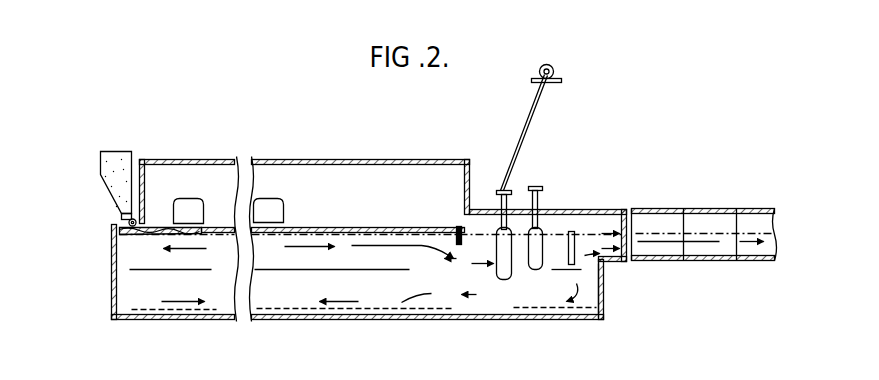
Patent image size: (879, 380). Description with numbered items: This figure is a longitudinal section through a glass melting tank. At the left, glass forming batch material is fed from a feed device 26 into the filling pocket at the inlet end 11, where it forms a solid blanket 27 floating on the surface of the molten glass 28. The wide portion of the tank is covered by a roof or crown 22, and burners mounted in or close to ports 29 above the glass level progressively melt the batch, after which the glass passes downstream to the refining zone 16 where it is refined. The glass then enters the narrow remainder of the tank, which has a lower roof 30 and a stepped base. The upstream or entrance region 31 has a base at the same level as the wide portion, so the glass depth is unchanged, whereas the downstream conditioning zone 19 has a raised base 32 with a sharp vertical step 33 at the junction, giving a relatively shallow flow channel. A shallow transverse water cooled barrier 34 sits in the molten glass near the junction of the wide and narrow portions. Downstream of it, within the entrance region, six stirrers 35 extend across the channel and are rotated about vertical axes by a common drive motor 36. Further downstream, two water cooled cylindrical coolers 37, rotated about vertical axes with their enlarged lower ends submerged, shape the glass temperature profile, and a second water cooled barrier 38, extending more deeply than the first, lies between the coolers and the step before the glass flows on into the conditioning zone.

The inlet end 11 is at (111, 268).
The refining zone 16 is at (383, 280).
The conditioning zone 19 is at (715, 238).
The roof or crown 22 is at (412, 160).
The feed device 26 is at (99, 163).
The solid blanket 27 is at (168, 232).
The molten glass 28 is at (210, 292).
The ports 29 is at (270, 208).
The lower roof 30 is at (698, 206).
The upstream or entrance region 31 is at (552, 293).
The raised base 32 is at (727, 262).
The sharp vertical step 33 is at (603, 300).
The water cooled barrier 34 is at (465, 226).
The stirrers 35 is at (535, 187).
The drive motor 36 is at (553, 68).
The water cooled cylindrical coolers 37 is at (544, 236).
The second water cooled barrier 38 is at (582, 220).